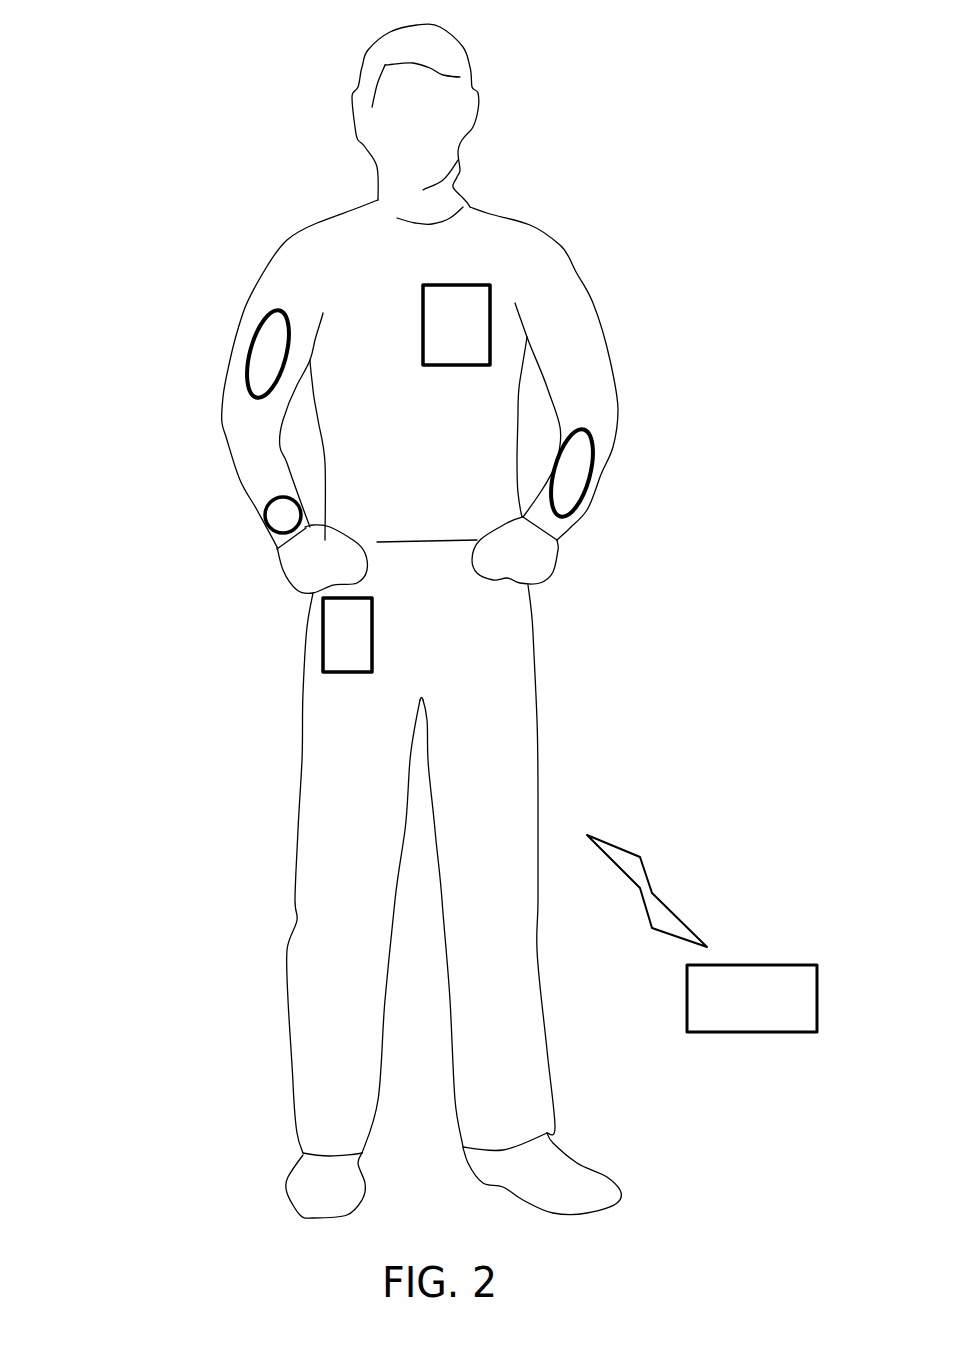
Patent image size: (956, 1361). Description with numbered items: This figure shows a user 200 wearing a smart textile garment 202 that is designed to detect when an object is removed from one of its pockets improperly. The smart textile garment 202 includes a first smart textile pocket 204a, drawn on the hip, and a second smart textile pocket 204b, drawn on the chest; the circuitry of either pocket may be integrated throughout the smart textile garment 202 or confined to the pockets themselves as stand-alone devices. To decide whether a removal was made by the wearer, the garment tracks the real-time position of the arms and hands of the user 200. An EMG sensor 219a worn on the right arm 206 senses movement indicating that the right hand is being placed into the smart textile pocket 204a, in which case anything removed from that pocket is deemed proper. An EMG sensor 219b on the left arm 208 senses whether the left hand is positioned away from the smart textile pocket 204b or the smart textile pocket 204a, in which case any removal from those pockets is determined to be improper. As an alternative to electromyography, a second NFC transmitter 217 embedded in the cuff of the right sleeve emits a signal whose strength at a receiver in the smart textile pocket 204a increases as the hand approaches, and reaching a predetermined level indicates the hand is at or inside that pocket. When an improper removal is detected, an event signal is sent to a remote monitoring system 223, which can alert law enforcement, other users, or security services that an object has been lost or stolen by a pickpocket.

The user 200 is at (192, 935).
The smart textile garment 202 is at (602, 695).
The first smart textile pocket 204a is at (321, 628).
The second smart textile pocket 204b is at (455, 367).
The right arm 206 is at (230, 280).
The left arm 208 is at (607, 280).
The second NFC transmitter 217 is at (265, 512).
The EMG sensor 219a is at (252, 346).
The EMG sensor 219b is at (588, 472).
The monitoring system 223 is at (752, 1034).